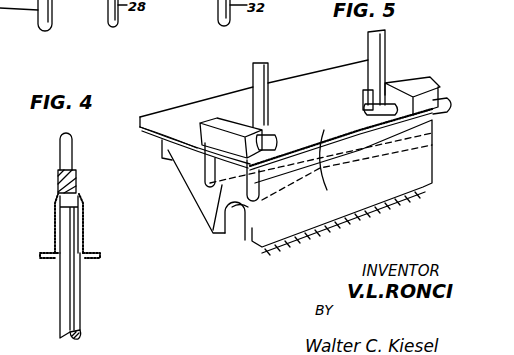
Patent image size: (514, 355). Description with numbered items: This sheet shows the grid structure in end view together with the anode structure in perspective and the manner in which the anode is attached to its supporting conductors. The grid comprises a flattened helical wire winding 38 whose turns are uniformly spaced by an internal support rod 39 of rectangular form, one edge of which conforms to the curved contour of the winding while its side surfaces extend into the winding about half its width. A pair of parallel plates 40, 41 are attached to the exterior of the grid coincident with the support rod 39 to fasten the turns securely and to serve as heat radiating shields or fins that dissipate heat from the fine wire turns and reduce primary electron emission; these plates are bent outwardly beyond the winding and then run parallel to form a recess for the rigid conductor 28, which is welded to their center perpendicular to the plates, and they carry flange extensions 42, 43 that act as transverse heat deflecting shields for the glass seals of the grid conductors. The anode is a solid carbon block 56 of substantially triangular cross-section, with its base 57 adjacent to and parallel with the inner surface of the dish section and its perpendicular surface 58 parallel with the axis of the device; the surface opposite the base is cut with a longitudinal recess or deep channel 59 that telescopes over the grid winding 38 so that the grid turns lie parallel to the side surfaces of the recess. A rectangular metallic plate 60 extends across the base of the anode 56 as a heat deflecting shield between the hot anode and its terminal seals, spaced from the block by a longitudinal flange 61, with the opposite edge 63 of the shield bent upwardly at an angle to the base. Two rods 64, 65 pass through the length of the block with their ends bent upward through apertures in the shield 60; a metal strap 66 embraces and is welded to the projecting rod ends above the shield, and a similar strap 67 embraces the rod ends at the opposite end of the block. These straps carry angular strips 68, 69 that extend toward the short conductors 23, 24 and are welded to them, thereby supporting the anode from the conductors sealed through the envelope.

In FIG. 5, the short conductor 23 is at (252, 78).
In FIG. 5, the short conductor 24 is at (385, 40).
In FIG. 4, the short conductor 28 is at (70, 308).
In FIG. 4, the flattened helical wire winding 38 is at (62, 135).
In FIG. 4, the internal support rod 39 is at (63, 182).
In FIG. 4, the parallel plate 40 is at (55, 225).
In FIG. 4, the parallel plate 41 is at (83, 223).
In FIG. 4, the flange extension 42 is at (43, 255).
In FIG. 4, the flange extension 43 is at (100, 255).
In FIG. 5, the solid carbon block 56 is at (190, 187).
In FIG. 5, the base 57 is at (162, 145).
In FIG. 5, the perpendicular surface 58 is at (418, 167).
In FIG. 5, the longitudinal recess or deep channel 59 is at (236, 215).
In FIG. 5, the rectangular metallic plate 60 is at (321, 165).
In FIG. 5, the longitudinal flange 61 is at (447, 109).
In FIG. 5, the opposite edge 63 is at (193, 108).
In FIG. 5, the rod 64 is at (205, 168).
In FIG. 5, the rod 65 is at (220, 183).
In FIG. 5, the metal strap 66 is at (168, 120).
In FIG. 5, the metal strap 67 is at (428, 81).
In FIG. 5, the angular strip 68 is at (238, 122).
In FIG. 5, the angular strip 69 is at (276, 134).